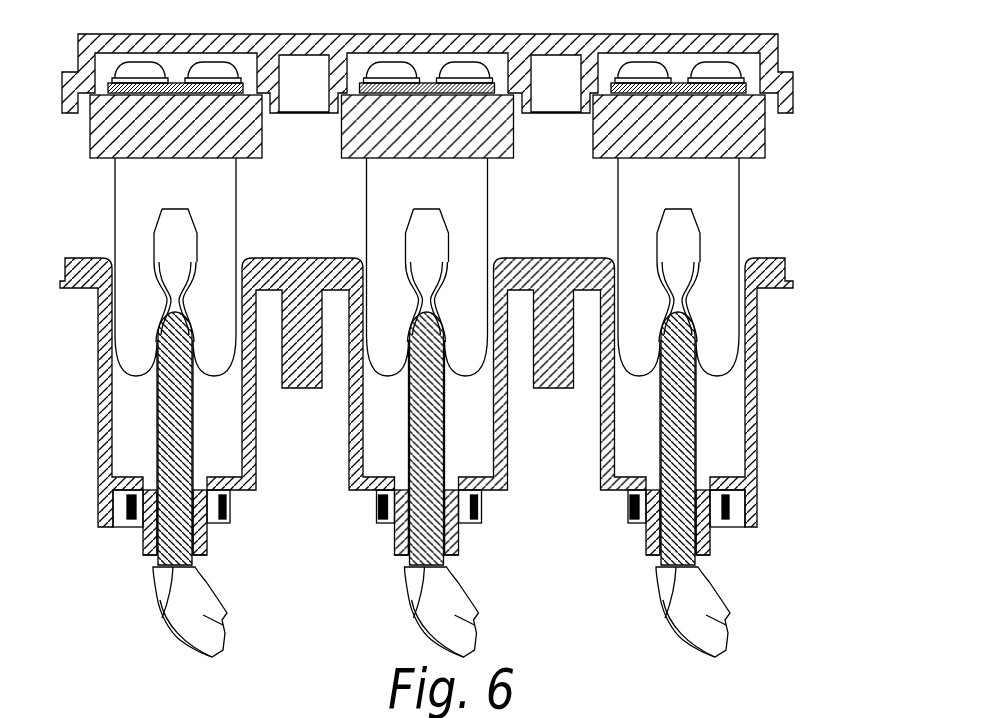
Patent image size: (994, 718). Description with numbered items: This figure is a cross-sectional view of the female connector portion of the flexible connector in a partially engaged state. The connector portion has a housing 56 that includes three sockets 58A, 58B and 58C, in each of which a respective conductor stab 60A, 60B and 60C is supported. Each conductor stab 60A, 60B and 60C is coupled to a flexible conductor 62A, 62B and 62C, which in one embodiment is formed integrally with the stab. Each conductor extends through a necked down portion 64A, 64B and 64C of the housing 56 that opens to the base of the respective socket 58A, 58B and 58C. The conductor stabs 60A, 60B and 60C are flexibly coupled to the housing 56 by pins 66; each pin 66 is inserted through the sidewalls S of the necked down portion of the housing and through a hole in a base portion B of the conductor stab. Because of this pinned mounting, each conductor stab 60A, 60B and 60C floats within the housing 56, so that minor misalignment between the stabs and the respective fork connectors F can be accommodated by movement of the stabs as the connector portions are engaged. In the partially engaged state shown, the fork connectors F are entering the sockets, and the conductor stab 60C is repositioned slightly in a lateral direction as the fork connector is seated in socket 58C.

The housing 56 is at (252, 435).
The socket 58A is at (135, 446).
The socket 58B is at (394, 356).
The socket 58C is at (645, 356).
The conductor stab 60A is at (168, 410).
The conductor stab 60B is at (484, 438).
The conductor stab 60C is at (735, 438).
The flexible conductor 62A is at (238, 628).
The flexible conductor 62B is at (487, 628).
The flexible conductor 62C is at (738, 628).
The necked down portion 64A is at (150, 558).
The necked down portion 64B is at (385, 589).
The necked down portion 64C is at (636, 589).
The pin 66 is at (137, 512).
The fork connector F is at (140, 193).
The sidewall S is at (142, 550).
The base portion B is at (168, 608).